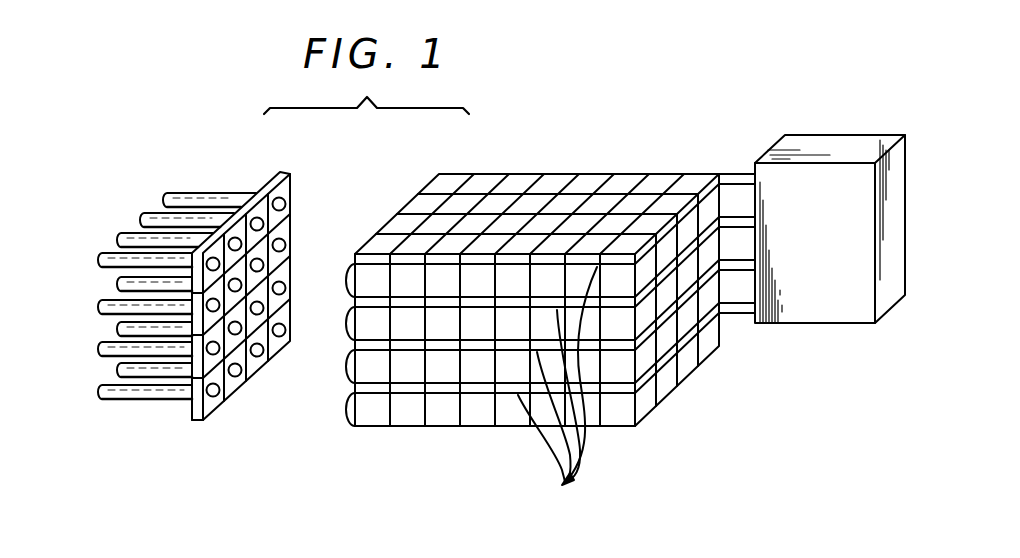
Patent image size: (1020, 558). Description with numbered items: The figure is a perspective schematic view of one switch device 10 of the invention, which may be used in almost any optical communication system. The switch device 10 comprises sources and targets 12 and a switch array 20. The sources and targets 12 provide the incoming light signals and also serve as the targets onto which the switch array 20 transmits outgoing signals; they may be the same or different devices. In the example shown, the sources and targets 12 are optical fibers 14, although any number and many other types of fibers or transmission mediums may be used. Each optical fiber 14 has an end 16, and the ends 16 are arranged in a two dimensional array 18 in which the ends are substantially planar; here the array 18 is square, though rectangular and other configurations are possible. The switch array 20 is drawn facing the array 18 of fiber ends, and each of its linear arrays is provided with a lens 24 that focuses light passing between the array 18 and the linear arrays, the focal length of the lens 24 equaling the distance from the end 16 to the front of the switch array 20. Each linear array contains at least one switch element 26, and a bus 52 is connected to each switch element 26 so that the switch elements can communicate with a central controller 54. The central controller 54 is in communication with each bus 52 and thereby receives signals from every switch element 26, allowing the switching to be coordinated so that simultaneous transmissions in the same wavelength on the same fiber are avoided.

The switch device 10 is at (660, 93).
The sources and targets 12 is at (175, 193).
The optical fibers 14 is at (243, 195).
The end 16 is at (288, 203).
The array 18 is at (202, 421).
The switch array 20 is at (507, 170).
The lens 24 is at (348, 410).
The switch element 26 is at (380, 427).
The bus 52 is at (557, 394).
The central controller 54 is at (845, 135).